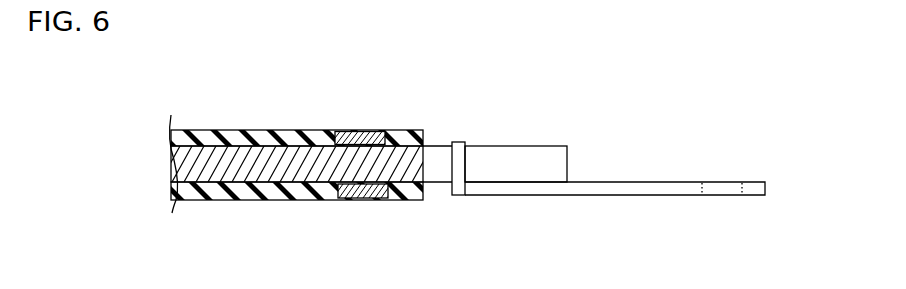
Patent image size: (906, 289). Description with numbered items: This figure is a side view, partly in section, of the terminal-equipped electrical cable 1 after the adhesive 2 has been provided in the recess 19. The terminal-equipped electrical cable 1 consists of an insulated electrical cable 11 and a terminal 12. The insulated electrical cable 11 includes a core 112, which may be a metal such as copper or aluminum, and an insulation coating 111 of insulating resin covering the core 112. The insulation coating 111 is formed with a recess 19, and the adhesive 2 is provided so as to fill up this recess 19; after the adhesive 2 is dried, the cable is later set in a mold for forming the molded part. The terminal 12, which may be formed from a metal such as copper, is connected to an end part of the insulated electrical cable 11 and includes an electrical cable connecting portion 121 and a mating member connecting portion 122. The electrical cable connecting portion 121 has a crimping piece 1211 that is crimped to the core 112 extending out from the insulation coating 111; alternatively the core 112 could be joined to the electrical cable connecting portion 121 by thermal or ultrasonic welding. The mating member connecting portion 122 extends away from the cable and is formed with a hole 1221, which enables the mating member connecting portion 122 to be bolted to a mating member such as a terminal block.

The terminal-equipped electrical cable 1 is at (165, 188).
The insulated electrical cable 11 is at (303, 129).
The insulation coating 111 is at (240, 130).
The core 112 is at (296, 146).
The adhesive 2 is at (347, 133).
The recess 19 is at (372, 133).
The terminal 12 is at (622, 208).
The electrical cable connecting portion 121 is at (509, 199).
The crimping piece 1211 is at (460, 165).
The mating member connecting portion 122 is at (628, 197).
The hole 1221 is at (735, 180).